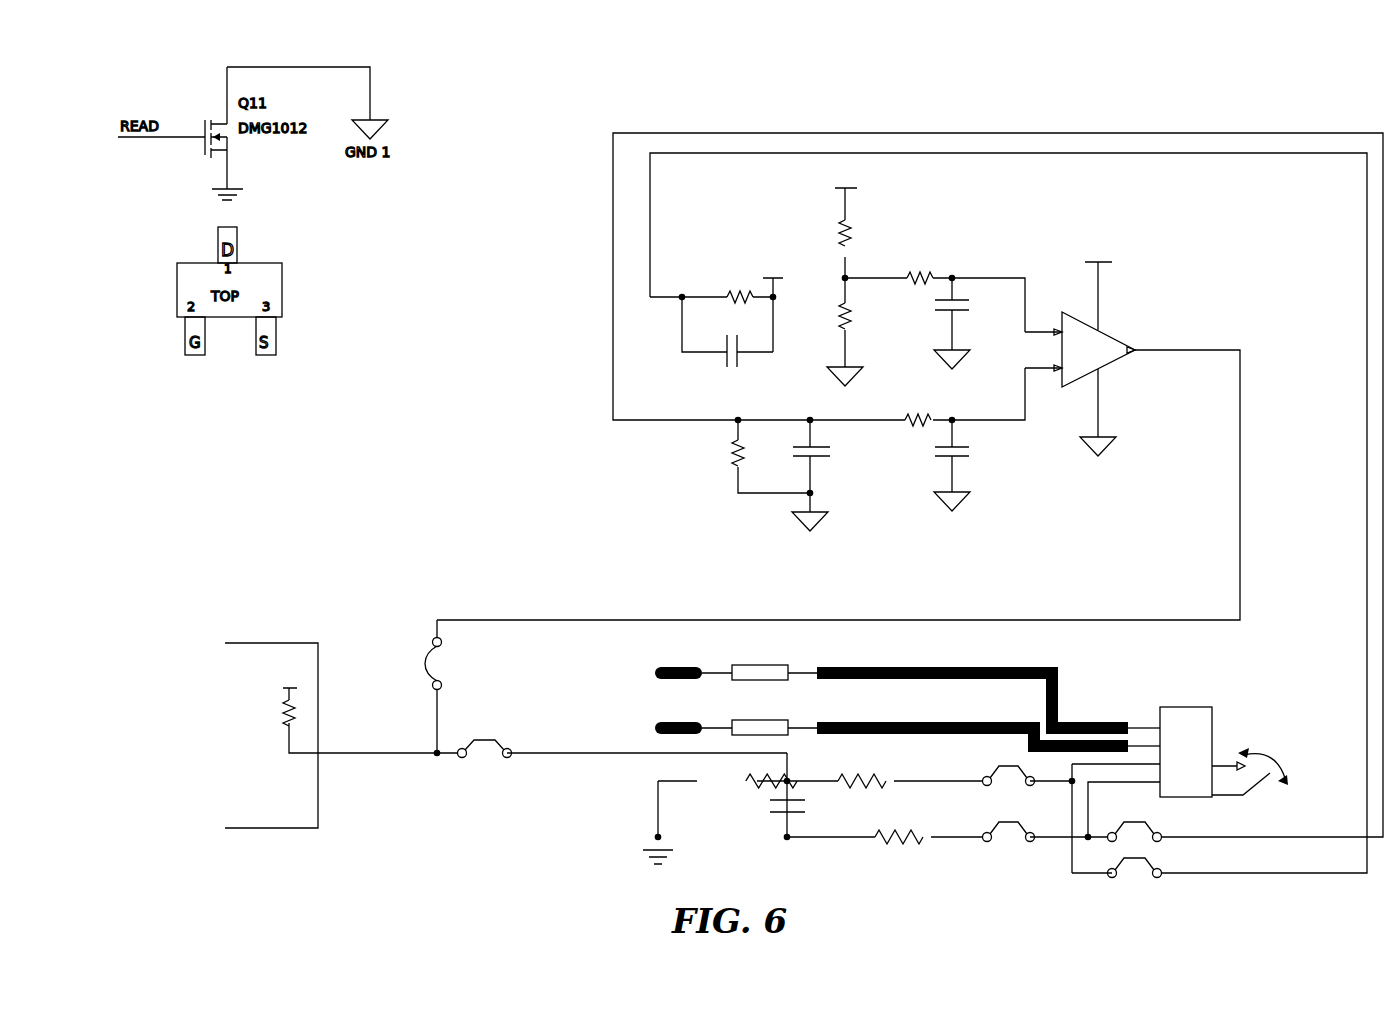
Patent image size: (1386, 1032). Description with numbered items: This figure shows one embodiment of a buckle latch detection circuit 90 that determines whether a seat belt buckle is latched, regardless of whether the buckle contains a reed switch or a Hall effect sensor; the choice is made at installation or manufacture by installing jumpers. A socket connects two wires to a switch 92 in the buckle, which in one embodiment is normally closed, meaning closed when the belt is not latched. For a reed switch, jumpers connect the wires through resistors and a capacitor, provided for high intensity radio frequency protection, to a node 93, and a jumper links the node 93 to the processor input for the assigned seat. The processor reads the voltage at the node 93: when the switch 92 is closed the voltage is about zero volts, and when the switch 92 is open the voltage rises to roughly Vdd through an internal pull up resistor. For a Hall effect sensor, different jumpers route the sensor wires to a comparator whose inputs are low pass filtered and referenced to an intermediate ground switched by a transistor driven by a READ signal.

The buckle latch detection circuit 90 is at (1097, 95).
The switch 92 is at (1250, 740).
The node 93 is at (775, 788).